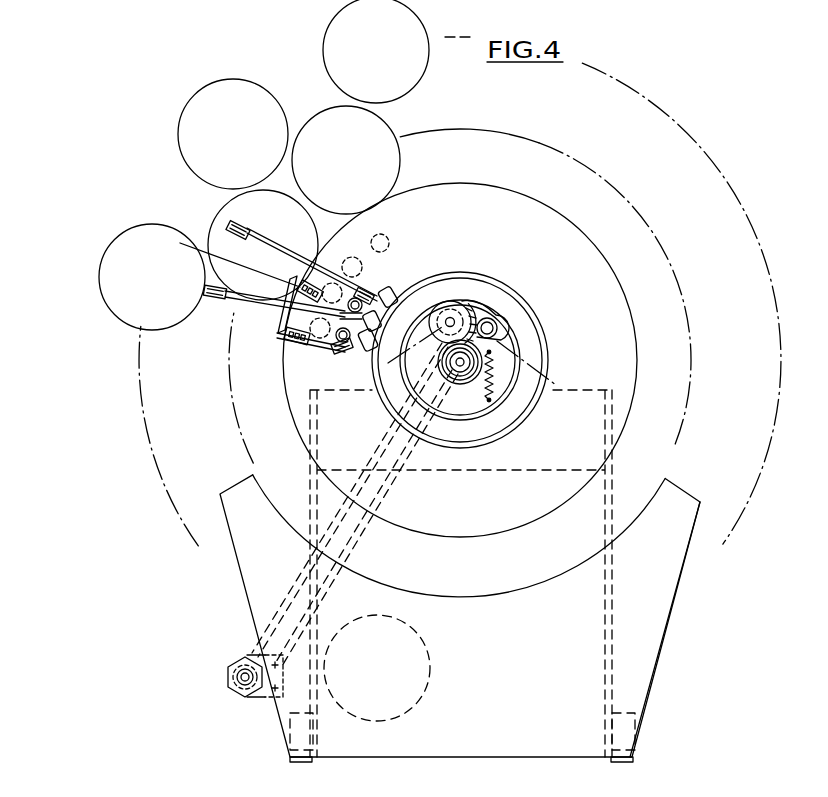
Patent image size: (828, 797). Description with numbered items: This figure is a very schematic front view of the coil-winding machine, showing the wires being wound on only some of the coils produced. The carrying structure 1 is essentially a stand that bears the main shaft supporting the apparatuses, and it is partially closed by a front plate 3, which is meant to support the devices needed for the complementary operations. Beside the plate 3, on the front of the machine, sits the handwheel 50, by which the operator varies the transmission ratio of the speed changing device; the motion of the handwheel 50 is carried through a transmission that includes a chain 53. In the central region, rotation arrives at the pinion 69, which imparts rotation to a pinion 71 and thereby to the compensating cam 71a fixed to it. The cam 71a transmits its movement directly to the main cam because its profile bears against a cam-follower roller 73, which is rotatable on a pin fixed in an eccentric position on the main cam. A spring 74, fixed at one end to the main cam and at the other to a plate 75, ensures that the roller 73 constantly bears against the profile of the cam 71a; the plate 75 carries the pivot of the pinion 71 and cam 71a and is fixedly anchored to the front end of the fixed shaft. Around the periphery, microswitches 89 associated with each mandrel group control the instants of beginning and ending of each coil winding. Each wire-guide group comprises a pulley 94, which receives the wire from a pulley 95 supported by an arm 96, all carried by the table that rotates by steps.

The carrying structure 1 is at (593, 488).
The front plate 3 is at (668, 560).
The handwheel 50 is at (229, 690).
The chain 53 is at (308, 563).
The pinion 69 is at (458, 383).
The pinion 71 is at (437, 302).
The compensating cam 71a is at (473, 300).
The cam-follower roller 73 is at (492, 322).
The spring 74 is at (494, 388).
The plate 75 is at (497, 329).
The microswitches 89 is at (367, 343).
The pulley 94 is at (337, 352).
The pulley 95 is at (203, 237).
The arm 96 is at (238, 302).